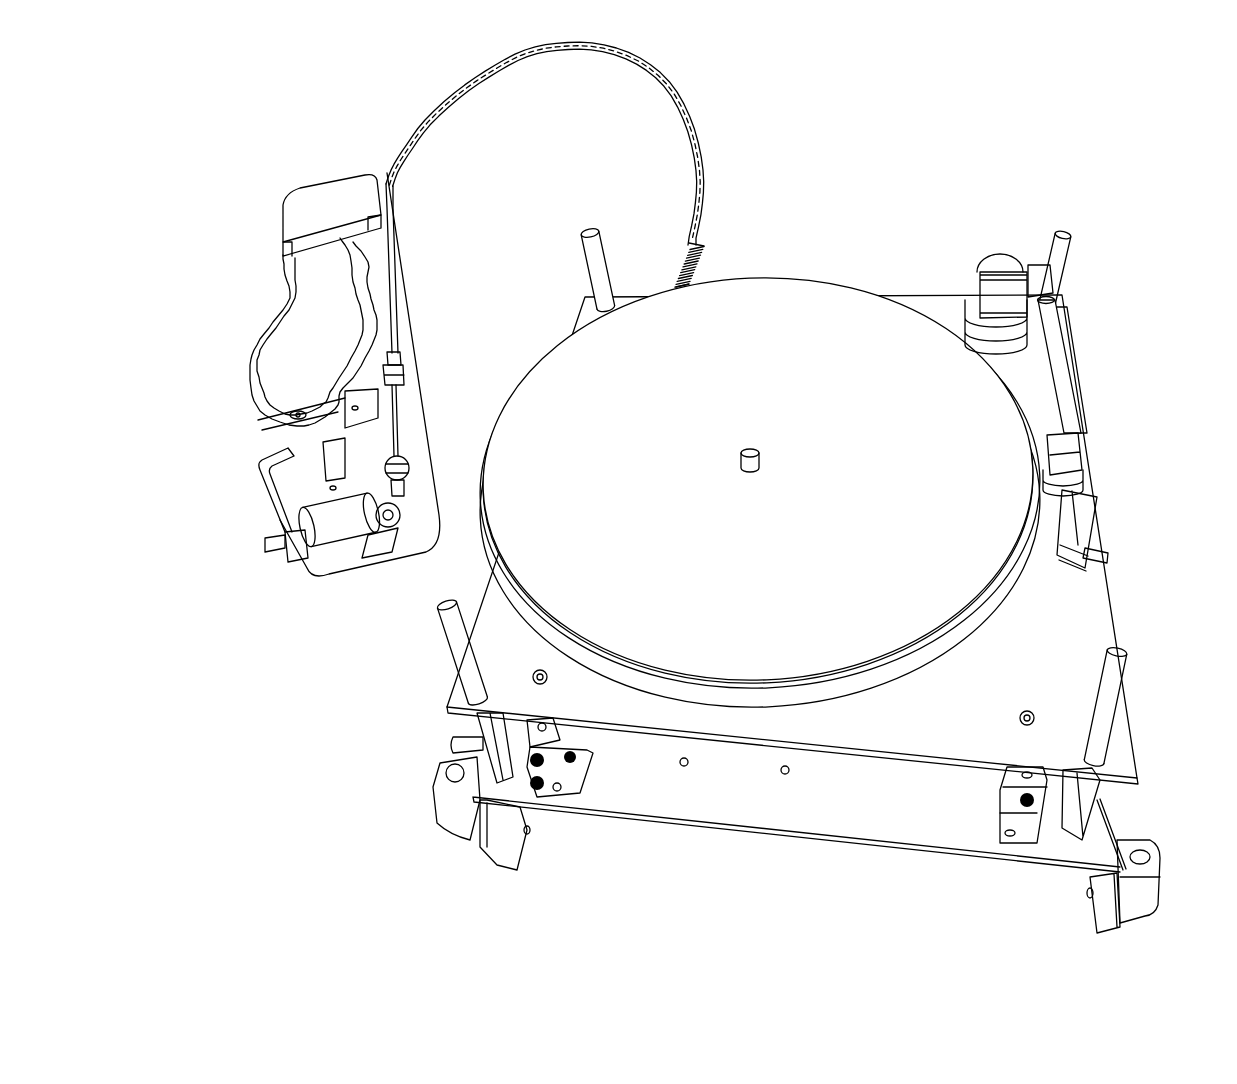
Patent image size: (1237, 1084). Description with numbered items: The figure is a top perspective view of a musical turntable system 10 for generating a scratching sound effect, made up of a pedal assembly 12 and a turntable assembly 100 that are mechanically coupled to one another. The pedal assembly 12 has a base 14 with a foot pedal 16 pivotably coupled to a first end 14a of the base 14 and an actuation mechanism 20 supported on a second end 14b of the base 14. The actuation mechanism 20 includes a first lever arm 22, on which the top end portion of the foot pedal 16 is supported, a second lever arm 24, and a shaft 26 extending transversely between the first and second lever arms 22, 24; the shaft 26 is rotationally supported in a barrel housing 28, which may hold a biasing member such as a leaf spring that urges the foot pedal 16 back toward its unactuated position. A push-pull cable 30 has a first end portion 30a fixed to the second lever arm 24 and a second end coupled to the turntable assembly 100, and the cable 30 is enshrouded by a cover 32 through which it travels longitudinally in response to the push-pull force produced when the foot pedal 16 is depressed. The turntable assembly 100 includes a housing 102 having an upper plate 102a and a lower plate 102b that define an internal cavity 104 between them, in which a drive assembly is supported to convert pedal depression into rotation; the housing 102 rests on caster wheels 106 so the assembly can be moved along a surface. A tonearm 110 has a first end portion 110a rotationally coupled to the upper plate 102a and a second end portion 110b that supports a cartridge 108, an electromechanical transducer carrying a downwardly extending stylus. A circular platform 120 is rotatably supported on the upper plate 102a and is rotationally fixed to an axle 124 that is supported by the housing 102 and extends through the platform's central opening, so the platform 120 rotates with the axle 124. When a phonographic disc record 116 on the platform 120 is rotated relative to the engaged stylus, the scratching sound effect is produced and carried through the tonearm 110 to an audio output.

The musical turntable system 10 is at (1097, 111).
The pedal assembly 12 is at (416, 256).
The base 14 is at (398, 222).
The first end 14a is at (282, 207).
The second end 14b is at (438, 492).
The foot pedal 16 is at (265, 334).
The actuation mechanism 20 is at (282, 557).
The first lever arm 22 is at (267, 502).
The second lever arm 24 is at (424, 516).
The shaft 26 is at (411, 550).
The barrel housing 28 is at (318, 548).
The push-pull cable 30 is at (678, 90).
The first end portion 30a is at (412, 405).
The cover 32 is at (699, 127).
The turntable assembly 100 is at (848, 217).
The housing 102 is at (1094, 601).
The upper plate 102a is at (1100, 651).
The lower plate 102b is at (863, 837).
The internal cavity 104 is at (654, 797).
The caster wheels 106 is at (482, 857).
The cartridge 108 is at (1100, 527).
The tonearm 110 is at (1057, 342).
The first end portion 110a is at (1020, 263).
The second end portion 110b is at (1087, 457).
The phonographic disc record 116 is at (877, 298).
The circular platform 120 is at (837, 690).
The axle 124 is at (757, 452).